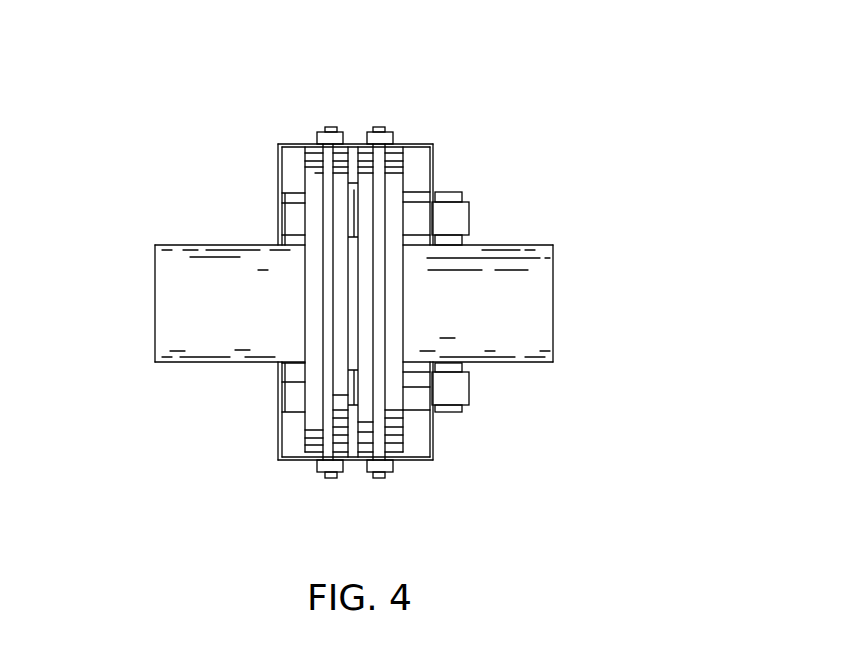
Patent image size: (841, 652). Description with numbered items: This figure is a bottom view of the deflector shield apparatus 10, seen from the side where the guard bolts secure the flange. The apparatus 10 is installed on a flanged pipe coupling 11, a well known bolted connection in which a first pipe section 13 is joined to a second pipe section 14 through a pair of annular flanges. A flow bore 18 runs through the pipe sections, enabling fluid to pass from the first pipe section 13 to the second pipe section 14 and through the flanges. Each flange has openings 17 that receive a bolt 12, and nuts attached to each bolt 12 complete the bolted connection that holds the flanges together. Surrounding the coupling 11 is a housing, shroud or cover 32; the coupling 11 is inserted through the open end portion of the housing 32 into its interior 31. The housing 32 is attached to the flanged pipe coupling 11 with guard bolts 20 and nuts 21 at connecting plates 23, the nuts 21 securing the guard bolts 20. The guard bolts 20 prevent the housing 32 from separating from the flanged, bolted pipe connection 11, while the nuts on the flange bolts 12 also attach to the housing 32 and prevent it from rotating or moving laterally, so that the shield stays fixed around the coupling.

The deflector shield apparatus 10 is at (579, 55).
The flanged pipe coupling 11 is at (288, 320).
The bolt 12 is at (470, 222).
The first pipe section 13 is at (200, 244).
The second pipe section 14 is at (545, 245).
The opening 17 is at (296, 214).
The flow bore 18 is at (565, 305).
The guard bolt 20 is at (323, 200).
The nut 21 is at (386, 133).
The connecting plate 23 is at (348, 143).
The interior 31 is at (425, 178).
The housing 32 is at (278, 158).